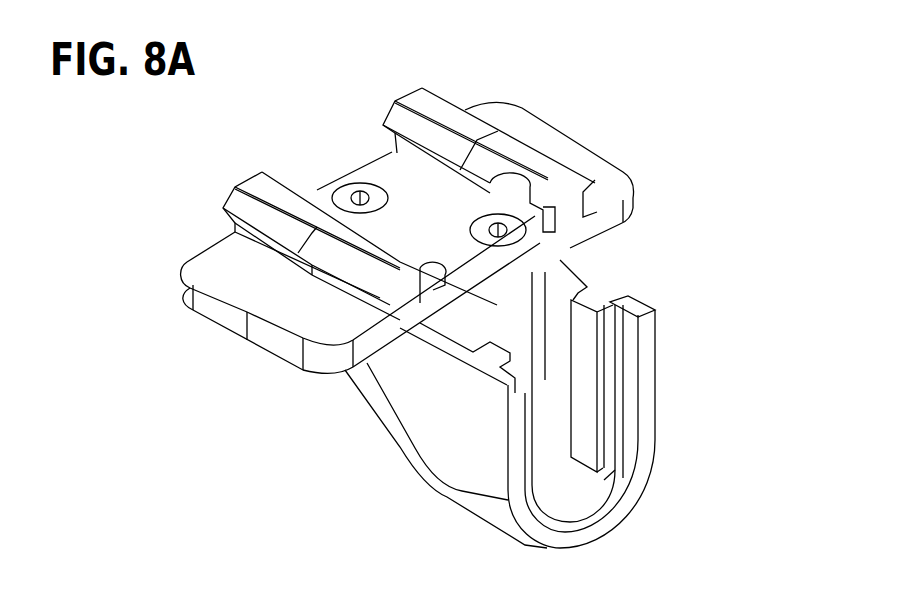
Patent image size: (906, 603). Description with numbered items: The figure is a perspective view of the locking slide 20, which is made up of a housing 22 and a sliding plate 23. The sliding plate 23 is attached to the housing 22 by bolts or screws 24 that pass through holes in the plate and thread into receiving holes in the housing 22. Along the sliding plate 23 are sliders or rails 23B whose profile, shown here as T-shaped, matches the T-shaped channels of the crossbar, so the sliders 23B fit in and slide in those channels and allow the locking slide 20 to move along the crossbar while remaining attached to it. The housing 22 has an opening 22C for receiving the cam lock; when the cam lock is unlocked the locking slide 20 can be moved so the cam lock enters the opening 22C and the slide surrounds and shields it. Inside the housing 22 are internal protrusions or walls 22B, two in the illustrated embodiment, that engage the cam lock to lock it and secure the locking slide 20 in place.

The locking slide 20 is at (622, 128).
The housing 22 is at (438, 418).
The internal protrusion or wall 22B is at (585, 368).
The opening 22C is at (548, 427).
The sliding plate 23 is at (307, 317).
The sliders or rails 23B is at (270, 210).
The bolts or screws 24 is at (510, 237).